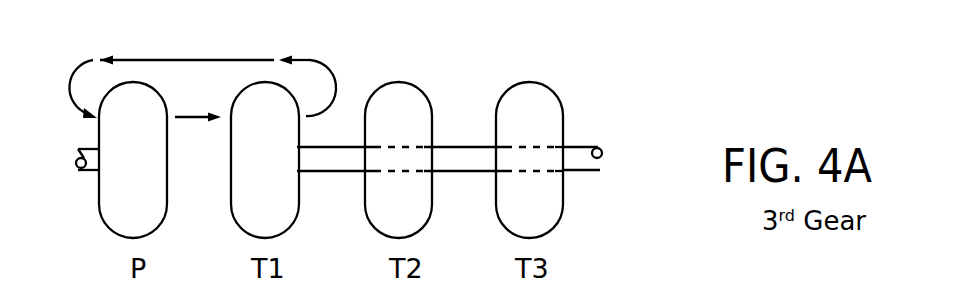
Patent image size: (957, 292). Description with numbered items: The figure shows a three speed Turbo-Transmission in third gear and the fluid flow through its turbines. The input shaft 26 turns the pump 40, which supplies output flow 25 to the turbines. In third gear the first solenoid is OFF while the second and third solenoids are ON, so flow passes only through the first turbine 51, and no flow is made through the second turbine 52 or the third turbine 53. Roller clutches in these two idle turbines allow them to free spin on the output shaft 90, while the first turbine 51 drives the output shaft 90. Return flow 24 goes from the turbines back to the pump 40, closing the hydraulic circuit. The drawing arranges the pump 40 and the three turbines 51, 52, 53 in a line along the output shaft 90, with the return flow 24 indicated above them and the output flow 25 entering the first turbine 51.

The return flow 24 is at (210, 57).
The output flow 25 is at (205, 115).
The input shaft 26 is at (77, 151).
The pump 40 is at (100, 209).
The turbine T1 51 is at (303, 198).
The turbine T2 52 is at (434, 194).
The turbine T3 53 is at (565, 190).
The output shaft 90 is at (600, 158).